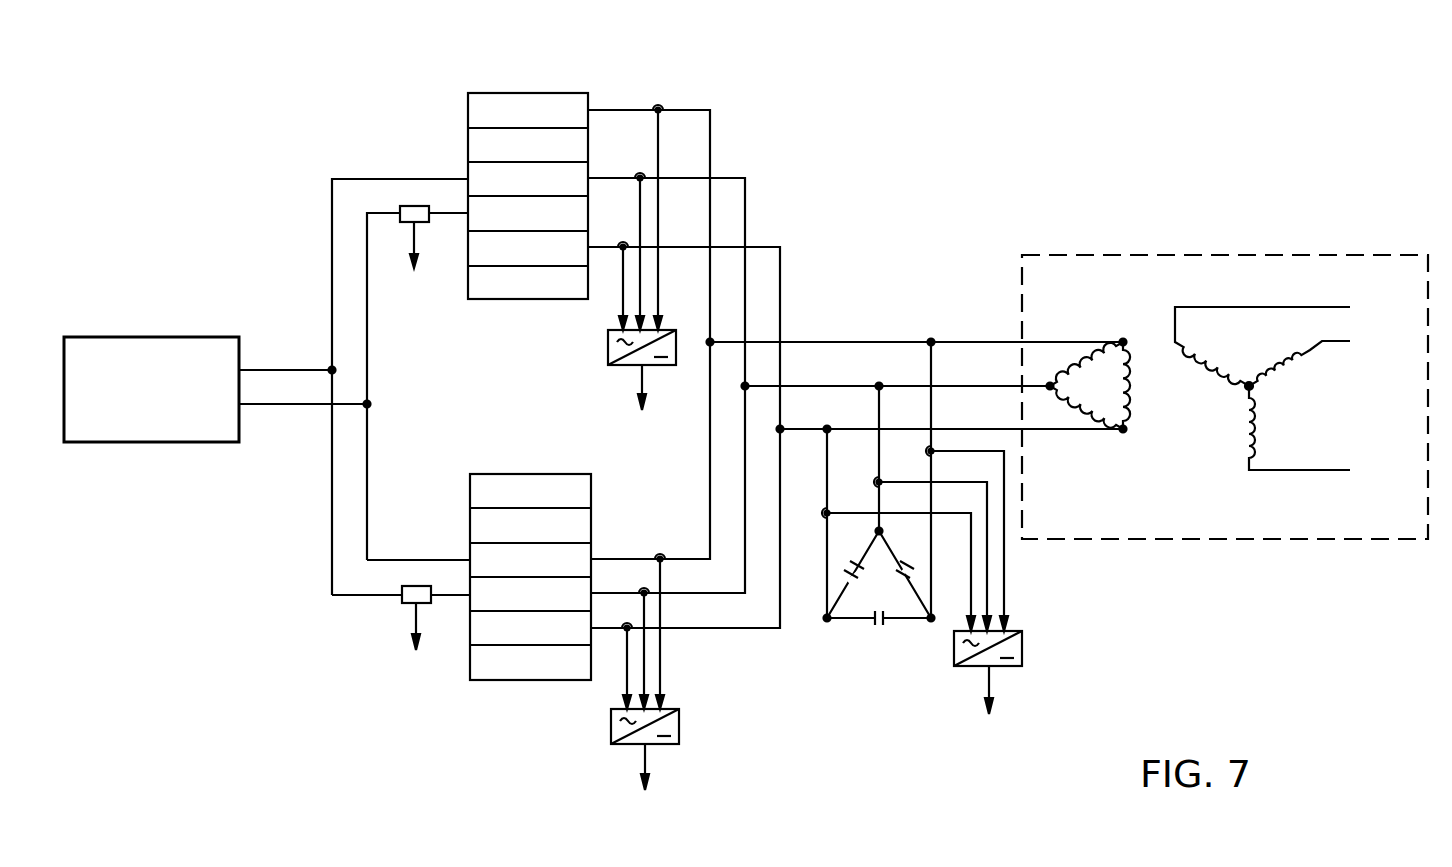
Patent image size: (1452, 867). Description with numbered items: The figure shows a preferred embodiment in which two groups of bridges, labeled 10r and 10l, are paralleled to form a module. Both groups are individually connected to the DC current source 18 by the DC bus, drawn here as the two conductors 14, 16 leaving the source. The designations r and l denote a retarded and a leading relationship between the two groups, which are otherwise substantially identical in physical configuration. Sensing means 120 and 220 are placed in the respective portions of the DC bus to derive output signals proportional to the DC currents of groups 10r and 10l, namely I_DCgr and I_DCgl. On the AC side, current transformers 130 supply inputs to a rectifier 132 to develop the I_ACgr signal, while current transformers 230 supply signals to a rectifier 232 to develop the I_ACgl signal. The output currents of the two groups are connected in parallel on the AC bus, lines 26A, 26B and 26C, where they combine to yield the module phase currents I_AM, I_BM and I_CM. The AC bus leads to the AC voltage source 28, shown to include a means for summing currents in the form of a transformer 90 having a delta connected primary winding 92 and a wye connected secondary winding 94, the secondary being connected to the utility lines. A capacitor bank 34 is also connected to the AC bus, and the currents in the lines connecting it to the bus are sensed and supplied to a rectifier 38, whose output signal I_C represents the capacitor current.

The DC current source 18 is at (176, 337).
The positive DC conductor 14 is at (268, 370).
The negative DC conductor 16 is at (262, 404).
The retarded group of bridges 10r is at (522, 93).
The leading group of bridges 10l is at (522, 474).
The sensing means 120 is at (414, 206).
The sensing means 220 is at (402, 600).
The current transformers 130 is at (623, 242).
The current transformers 230 is at (627, 623).
The rectifier 132 is at (608, 342).
The rectifier 232 is at (679, 735).
The AC bus line 26A is at (868, 342).
The AC bus line 26B is at (900, 386).
The AC bus line 26C is at (963, 429).
The capacitor bank 34 is at (879, 577).
The rectifier 38 is at (1023, 650).
The AC voltage source 28 is at (1085, 255).
The transformer 90 is at (1199, 366).
The delta connected primary winding 92 is at (1125, 395).
The wye connected secondary winding 94 is at (1283, 358).